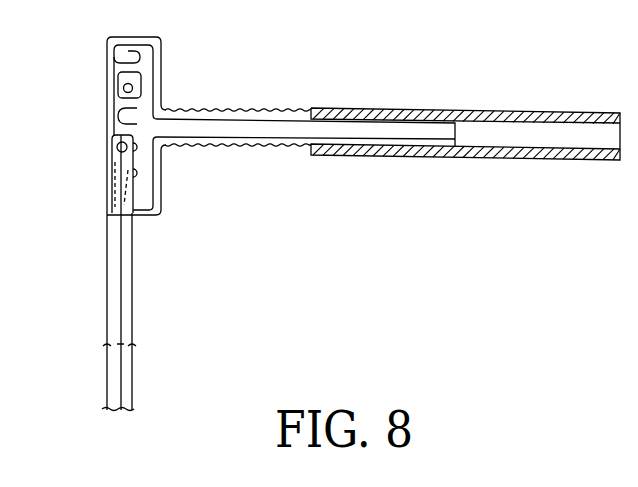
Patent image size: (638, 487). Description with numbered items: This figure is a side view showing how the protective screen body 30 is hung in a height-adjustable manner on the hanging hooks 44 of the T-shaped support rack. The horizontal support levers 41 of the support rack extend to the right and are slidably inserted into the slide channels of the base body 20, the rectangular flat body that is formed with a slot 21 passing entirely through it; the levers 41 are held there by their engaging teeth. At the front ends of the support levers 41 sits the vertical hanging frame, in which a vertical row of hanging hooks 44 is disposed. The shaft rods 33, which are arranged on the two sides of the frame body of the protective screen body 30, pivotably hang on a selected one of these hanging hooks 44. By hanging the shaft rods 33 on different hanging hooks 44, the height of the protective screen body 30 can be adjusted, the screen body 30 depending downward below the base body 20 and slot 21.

The base body 20 is at (453, 110).
The slot 21 is at (528, 130).
The protective screen body 30 is at (107, 266).
The shaft rods 33 is at (122, 89).
The horizontal support levers 41 is at (259, 142).
The hanging hooks 44 is at (106, 94).